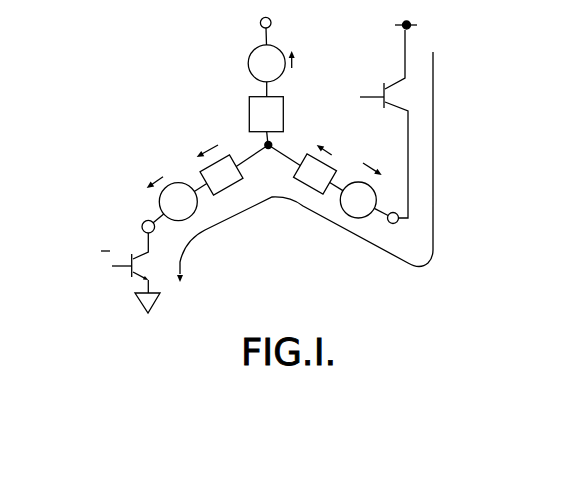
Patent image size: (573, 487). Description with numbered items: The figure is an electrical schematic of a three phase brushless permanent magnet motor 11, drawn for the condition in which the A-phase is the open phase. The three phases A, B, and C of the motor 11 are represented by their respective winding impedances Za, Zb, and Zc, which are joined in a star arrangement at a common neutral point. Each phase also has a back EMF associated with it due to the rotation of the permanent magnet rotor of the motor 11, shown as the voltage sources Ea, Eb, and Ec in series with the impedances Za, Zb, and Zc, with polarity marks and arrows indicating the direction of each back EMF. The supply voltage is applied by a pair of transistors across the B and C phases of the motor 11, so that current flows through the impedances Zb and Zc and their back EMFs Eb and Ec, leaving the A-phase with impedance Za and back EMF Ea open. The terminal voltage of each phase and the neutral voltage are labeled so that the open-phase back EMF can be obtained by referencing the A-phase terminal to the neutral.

The brushless permanent magnet motor 11 is at (140, 104).
The A-phase back EMF Ea is at (266, 63).
The B-phase back EMF Eb is at (358, 200).
The C-phase back EMF Ec is at (178, 202).
The A-phase impedance Za is at (266, 114).
The B-phase impedance Zb is at (315, 174).
The C-phase impedance Zc is at (221, 175).